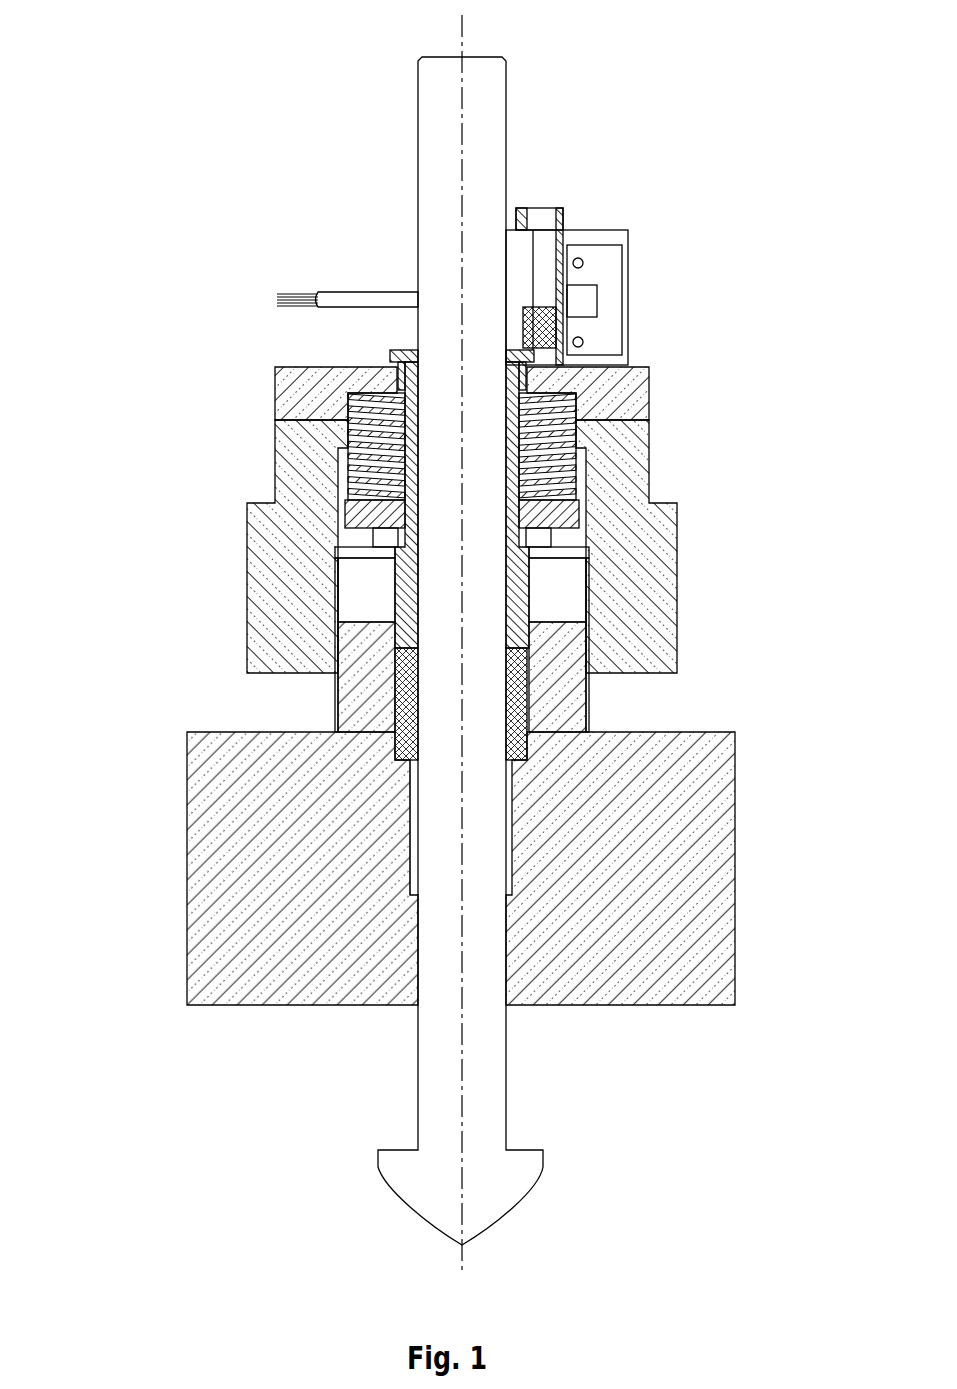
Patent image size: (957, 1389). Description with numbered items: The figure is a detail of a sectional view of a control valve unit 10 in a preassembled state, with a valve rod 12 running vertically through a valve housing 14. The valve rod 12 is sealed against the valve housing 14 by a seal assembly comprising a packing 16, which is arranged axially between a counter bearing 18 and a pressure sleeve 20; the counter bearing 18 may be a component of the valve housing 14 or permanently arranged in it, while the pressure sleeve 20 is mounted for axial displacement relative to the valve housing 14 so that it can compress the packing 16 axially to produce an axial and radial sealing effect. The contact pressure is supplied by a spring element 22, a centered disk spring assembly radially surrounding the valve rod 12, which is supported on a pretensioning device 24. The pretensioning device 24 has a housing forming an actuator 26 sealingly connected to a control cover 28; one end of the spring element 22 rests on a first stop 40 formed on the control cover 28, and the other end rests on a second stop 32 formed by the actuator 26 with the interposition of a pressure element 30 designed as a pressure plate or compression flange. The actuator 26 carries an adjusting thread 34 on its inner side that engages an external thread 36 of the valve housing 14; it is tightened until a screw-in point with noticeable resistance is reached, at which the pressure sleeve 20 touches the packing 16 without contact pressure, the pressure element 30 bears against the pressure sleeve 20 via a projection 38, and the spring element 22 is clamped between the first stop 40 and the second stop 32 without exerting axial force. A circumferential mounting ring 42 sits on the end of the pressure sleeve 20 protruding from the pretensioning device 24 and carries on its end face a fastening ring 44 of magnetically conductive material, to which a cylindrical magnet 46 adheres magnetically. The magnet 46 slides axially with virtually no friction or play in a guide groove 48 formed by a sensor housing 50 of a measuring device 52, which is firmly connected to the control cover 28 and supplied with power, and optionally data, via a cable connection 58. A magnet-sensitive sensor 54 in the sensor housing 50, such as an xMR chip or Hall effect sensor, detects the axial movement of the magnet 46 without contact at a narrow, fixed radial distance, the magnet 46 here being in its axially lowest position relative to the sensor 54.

The control valve unit 10 is at (68, 20).
The valve rod 12 is at (416, 124).
The valve housing 14 is at (210, 768).
The packing 16 is at (530, 698).
The counter bearing 18 is at (510, 752).
The pressure sleeve 20 is at (515, 603).
The spring element 22 is at (568, 468).
The pretensioning device 24 is at (250, 433).
The actuator 26 is at (273, 525).
The control cover 28 is at (300, 403).
The pressure element 30 is at (590, 500).
The second stop 32 is at (562, 518).
The adjusting thread 34 is at (548, 645).
The external thread 36 is at (590, 680).
The projection 38 is at (350, 545).
The first stop 40 is at (400, 375).
The mounting ring 42 is at (378, 357).
The fastening ring 44 is at (395, 352).
The magnet 46 is at (585, 347).
The guide groove 48 is at (538, 238).
The sensor housing 50 is at (590, 237).
The measuring device 52 is at (645, 240).
The sensor 54 is at (582, 297).
The cable connection 58 is at (372, 293).